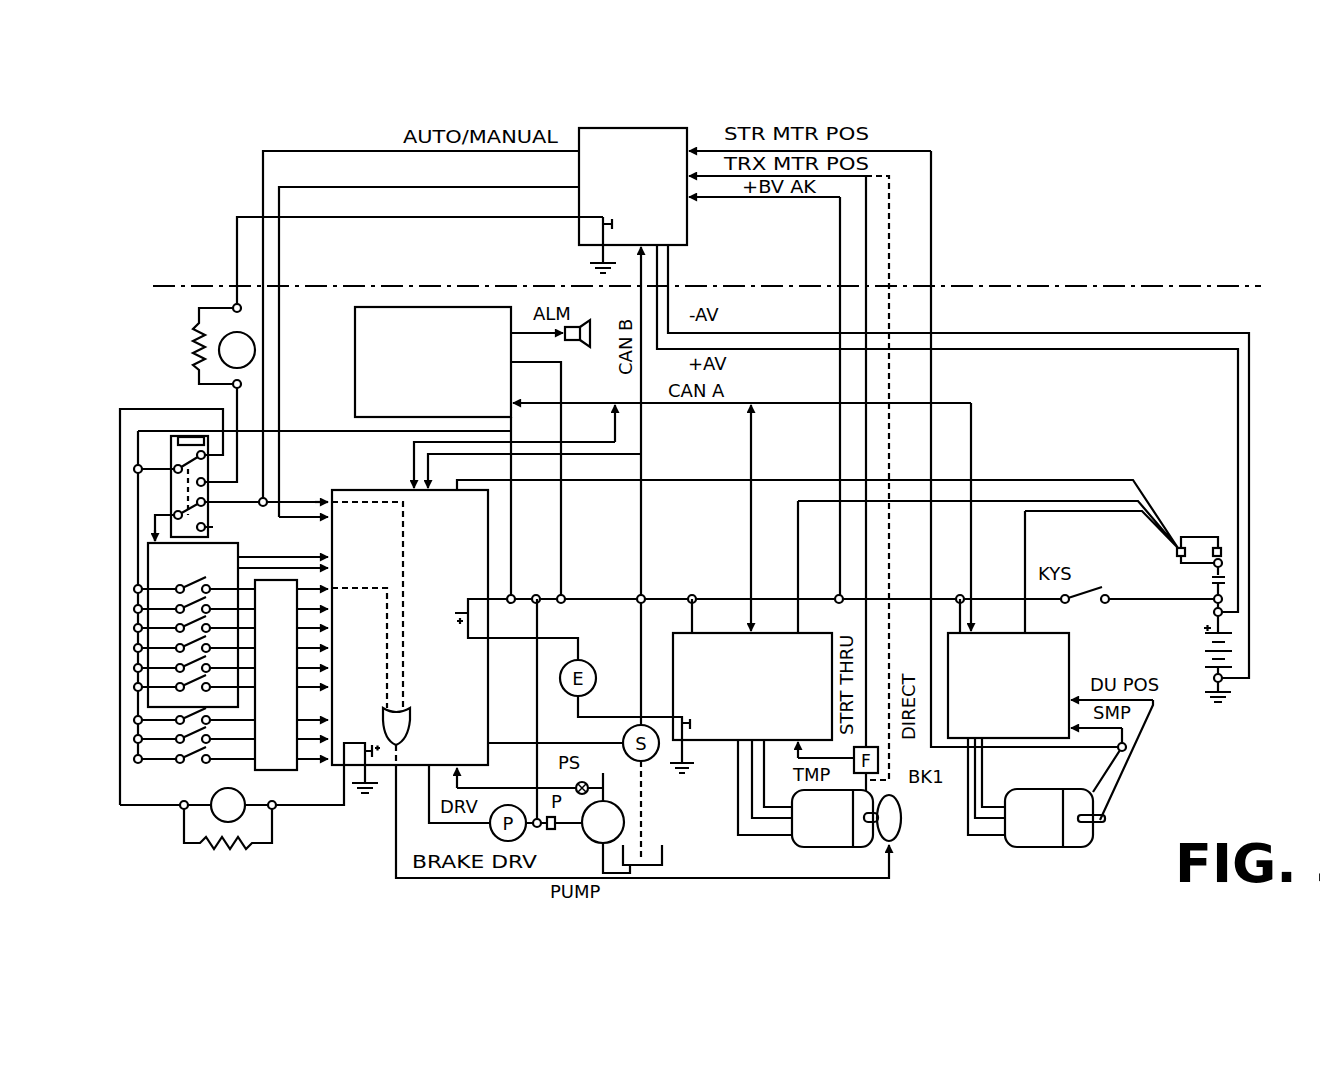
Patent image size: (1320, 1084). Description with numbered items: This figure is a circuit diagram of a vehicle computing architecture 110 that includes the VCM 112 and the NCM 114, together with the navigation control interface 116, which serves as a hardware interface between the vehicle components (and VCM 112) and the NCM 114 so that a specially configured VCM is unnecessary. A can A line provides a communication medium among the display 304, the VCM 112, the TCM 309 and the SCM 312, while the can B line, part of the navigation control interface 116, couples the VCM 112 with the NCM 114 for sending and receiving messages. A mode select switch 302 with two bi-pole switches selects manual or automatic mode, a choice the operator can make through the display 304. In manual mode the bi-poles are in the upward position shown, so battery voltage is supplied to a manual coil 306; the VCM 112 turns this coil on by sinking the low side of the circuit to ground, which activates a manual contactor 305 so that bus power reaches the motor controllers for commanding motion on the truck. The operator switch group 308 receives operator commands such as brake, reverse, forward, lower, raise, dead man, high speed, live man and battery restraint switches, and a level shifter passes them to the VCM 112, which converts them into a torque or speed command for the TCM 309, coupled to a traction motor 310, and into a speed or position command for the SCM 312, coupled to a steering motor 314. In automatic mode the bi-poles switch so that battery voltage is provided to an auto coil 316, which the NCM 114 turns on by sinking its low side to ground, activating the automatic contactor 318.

The vehicle computing architecture 110 is at (1208, 150).
The navigation control interface 116 is at (1223, 243).
The NCM 114 is at (633, 200).
The VCM 112 is at (455, 628).
The mode select switch 302 is at (226, 518).
The display 304 is at (433, 362).
The manual contactor 305 is at (1112, 542).
The manual coil 306 is at (250, 796).
The SCTT 308 is at (110, 545).
The TCM 309 is at (752, 686).
The traction motor 310 is at (798, 805).
The SCM 312 is at (1008, 685).
The steering motor 314 is at (1043, 807).
The auto coil 316 is at (182, 322).
The automatic contactor 318 is at (1203, 514).